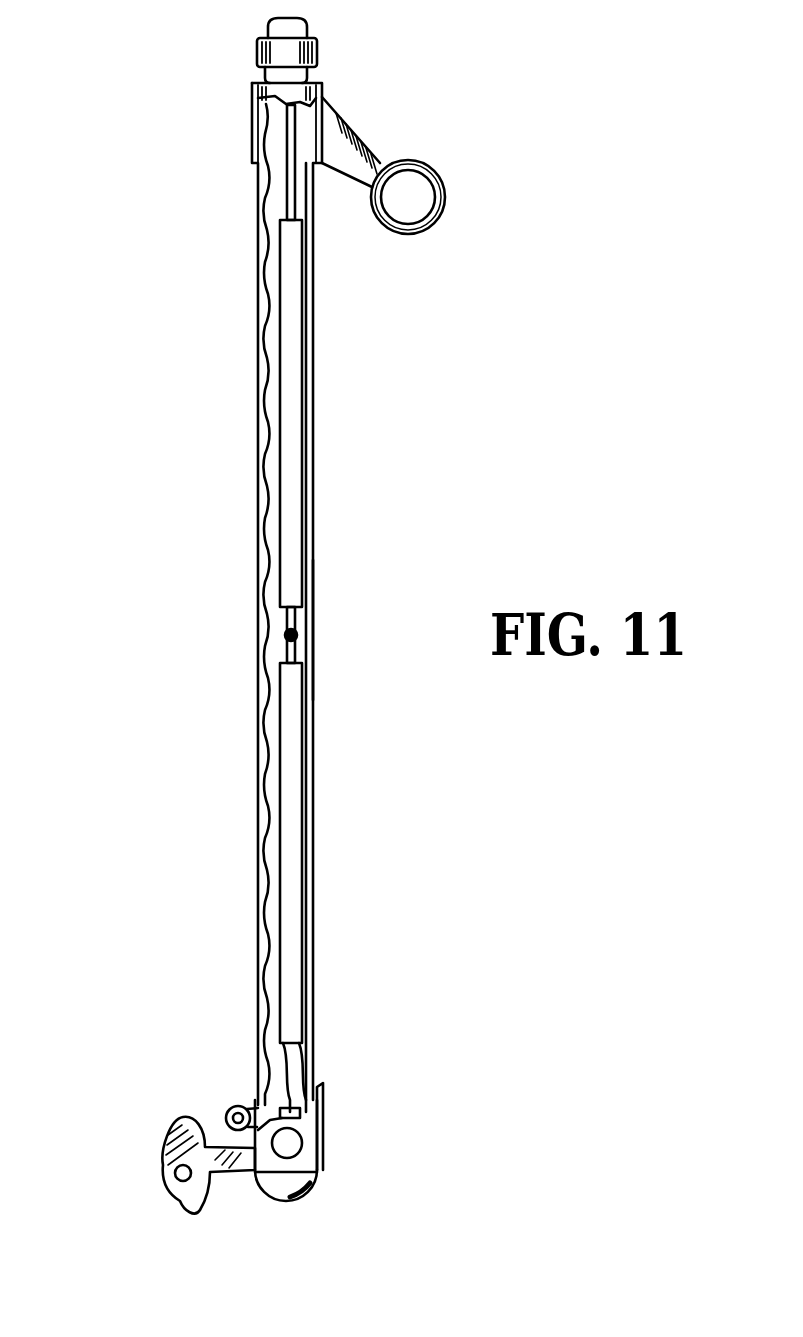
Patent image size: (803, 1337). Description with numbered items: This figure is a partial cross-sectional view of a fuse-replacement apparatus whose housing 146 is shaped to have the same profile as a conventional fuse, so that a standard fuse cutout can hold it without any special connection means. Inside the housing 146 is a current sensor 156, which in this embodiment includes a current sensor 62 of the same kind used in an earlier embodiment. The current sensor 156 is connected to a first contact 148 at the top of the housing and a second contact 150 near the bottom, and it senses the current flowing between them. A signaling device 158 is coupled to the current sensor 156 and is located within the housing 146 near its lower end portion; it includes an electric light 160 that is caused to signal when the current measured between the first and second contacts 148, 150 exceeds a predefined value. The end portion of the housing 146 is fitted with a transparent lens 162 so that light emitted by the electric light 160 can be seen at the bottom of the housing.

The current sensor 62 is at (278, 623).
The housing 146 is at (313, 417).
The first contact 148 is at (330, 117).
The second contact 150 is at (163, 1150).
The current sensor 156 is at (332, 628).
The signaling device 158 is at (307, 1080).
The electric light 160 is at (292, 1148).
The transparent lens 162 is at (313, 1190).